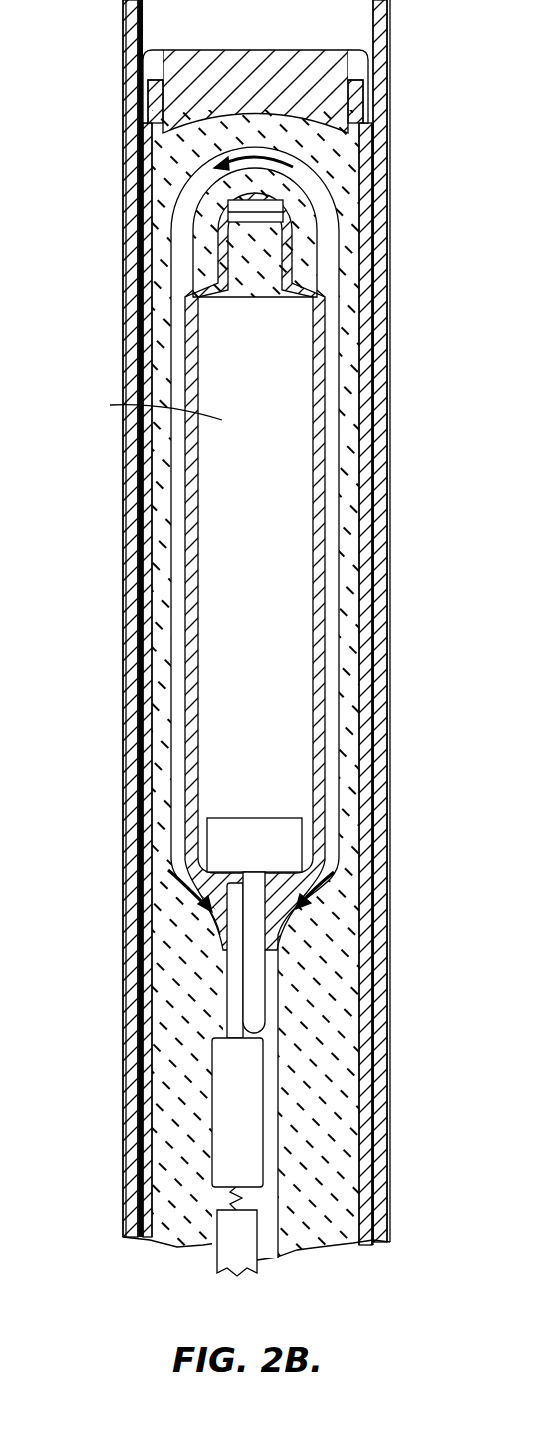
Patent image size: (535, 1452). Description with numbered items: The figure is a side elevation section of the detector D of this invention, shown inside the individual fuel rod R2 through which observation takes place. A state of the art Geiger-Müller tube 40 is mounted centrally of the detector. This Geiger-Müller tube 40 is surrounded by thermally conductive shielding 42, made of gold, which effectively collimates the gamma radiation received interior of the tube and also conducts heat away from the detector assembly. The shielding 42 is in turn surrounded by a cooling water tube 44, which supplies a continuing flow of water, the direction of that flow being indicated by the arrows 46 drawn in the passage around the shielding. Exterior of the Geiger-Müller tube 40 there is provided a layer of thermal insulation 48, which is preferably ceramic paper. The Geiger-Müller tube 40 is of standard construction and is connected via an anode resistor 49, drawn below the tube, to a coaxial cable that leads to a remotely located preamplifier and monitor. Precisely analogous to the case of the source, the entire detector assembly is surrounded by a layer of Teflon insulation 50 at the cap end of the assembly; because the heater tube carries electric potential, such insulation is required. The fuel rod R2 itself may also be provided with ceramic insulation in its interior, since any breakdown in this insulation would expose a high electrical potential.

The Geiger-Müller tube 40 is at (270, 669).
The thermally conductive shielding 42 is at (325, 378).
The cooling water tube 44 is at (338, 408).
The arrows 46 is at (257, 157).
The thermal insulation 48 is at (355, 526).
The anode resistor 49 is at (258, 1097).
The Teflon insulation 50 is at (148, 50).
The detector D is at (228, 422).
The fuel rod R2 is at (388, 288).